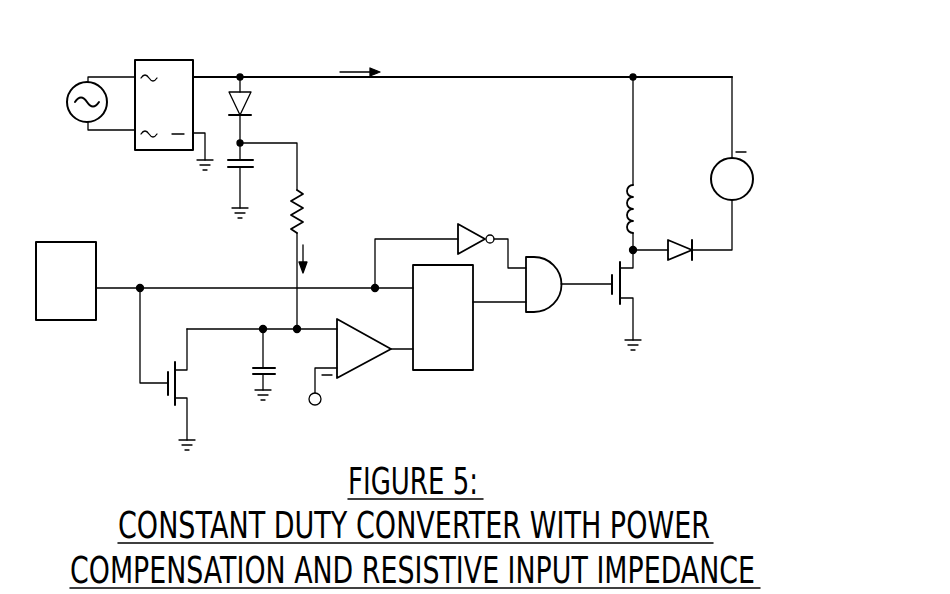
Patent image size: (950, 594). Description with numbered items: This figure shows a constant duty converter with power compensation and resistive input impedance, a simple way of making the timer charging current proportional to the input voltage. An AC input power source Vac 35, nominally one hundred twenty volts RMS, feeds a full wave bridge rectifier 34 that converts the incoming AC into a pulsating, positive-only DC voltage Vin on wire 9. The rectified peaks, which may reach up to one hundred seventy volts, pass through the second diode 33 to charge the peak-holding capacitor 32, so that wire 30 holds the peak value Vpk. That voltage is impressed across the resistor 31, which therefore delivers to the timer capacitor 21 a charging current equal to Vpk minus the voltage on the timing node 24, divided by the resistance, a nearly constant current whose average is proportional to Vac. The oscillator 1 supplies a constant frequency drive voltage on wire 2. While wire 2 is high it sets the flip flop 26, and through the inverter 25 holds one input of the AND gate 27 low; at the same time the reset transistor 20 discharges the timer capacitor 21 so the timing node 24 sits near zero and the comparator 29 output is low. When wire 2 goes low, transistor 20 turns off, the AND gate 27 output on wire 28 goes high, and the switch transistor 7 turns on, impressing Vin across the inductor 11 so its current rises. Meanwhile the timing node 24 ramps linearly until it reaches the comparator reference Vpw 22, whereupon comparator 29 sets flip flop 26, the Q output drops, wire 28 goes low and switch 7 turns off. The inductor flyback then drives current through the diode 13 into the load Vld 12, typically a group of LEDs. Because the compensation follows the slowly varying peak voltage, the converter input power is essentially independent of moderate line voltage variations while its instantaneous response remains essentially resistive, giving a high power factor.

The oscillator 1 is at (63, 242).
The wire 2 is at (200, 288).
The electronic switch 7 is at (635, 280).
The wire 9 is at (521, 77).
The inductor 11 is at (637, 219).
The load 12 is at (712, 180).
The diode 13 is at (695, 252).
The transistor 20 is at (172, 398).
The timer capacitor 21 is at (270, 373).
The pulse width voltage terminal VPW 22 is at (313, 408).
The timing node 24 is at (241, 329).
The inverter 25 is at (456, 228).
The flip flop 26 is at (473, 345).
The AND gate 27 is at (552, 258).
The wire 28 is at (588, 283).
The comparator 29 is at (370, 362).
The wire 30 is at (297, 162).
The resistor 31 is at (302, 198).
The capacitor 32 is at (228, 162).
The diode D2 33 is at (246, 91).
The rectifier 34 is at (164, 60).
The AC input power source 35 is at (78, 82).